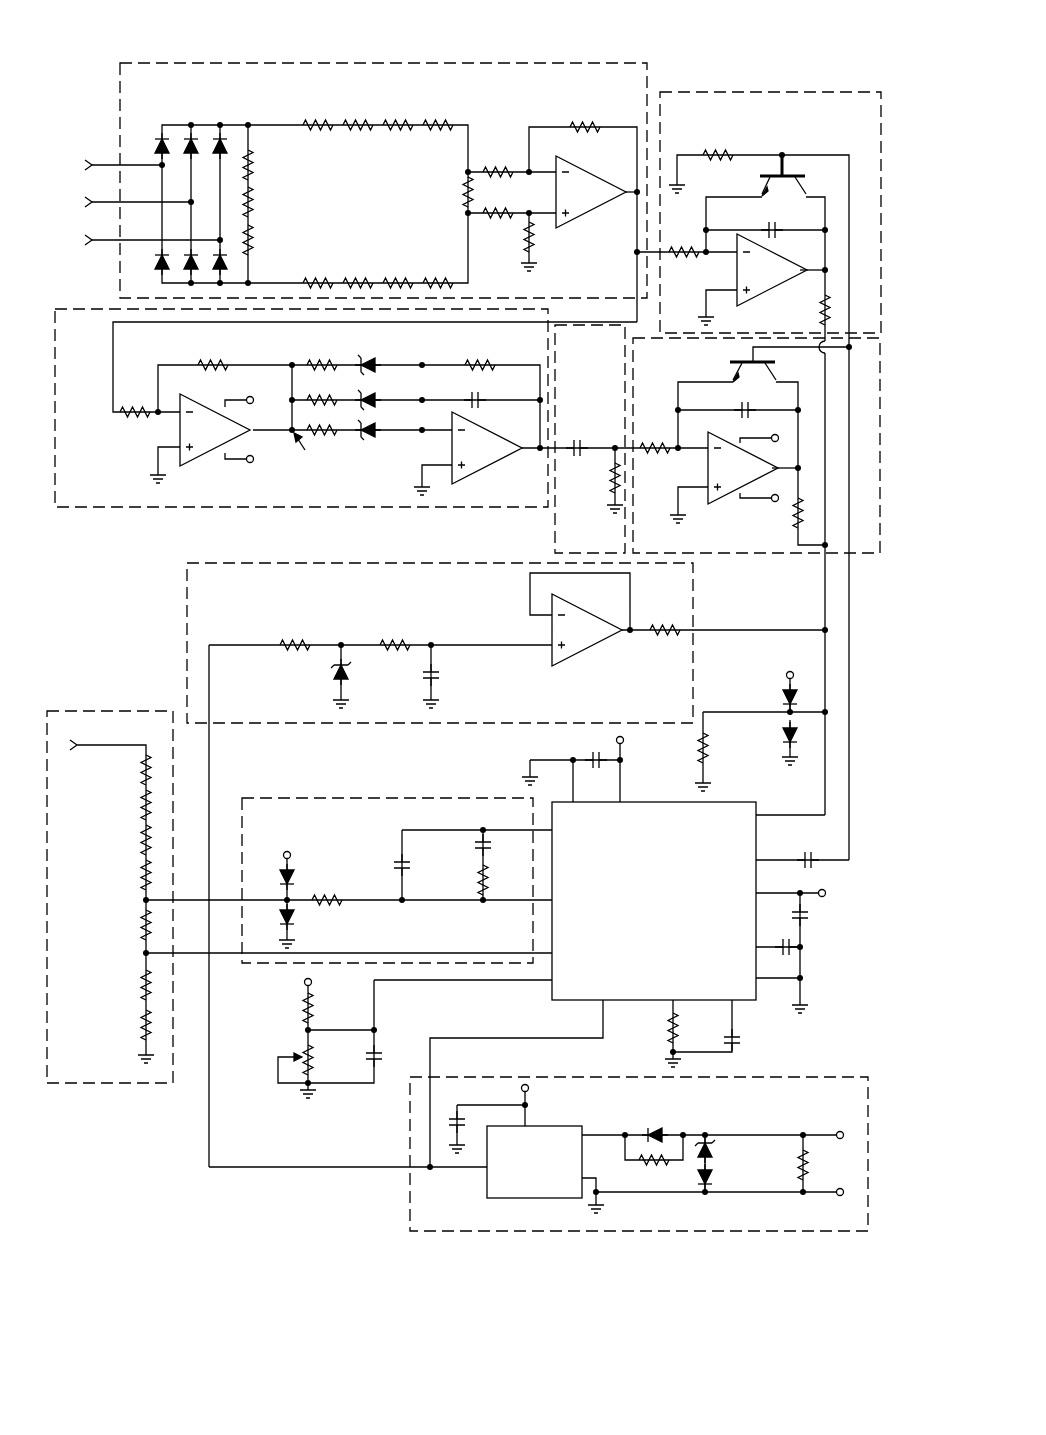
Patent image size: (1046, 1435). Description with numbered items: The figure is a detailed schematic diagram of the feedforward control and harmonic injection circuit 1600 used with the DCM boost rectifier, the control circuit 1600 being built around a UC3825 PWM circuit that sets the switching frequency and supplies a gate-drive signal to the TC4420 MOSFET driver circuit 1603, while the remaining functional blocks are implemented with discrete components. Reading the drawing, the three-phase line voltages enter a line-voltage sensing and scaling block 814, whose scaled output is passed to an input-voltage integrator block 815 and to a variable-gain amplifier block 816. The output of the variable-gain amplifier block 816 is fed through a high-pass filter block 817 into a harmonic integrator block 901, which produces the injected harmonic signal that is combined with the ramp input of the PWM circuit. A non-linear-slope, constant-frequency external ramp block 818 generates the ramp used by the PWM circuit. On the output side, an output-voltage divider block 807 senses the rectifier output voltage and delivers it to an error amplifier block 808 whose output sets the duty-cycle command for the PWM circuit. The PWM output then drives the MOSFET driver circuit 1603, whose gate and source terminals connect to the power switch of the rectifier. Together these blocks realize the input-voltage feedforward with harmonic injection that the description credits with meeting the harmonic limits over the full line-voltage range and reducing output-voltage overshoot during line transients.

The feedforward control and harmonic injection circuit 1600 is at (697, 53).
The line voltage sensing and scaling circuit 814 is at (564, 62).
The input voltage integrator 815 is at (826, 91).
The variable-gain amplifier 816 is at (125, 507).
The high-pass filter 817 is at (555, 522).
The non-linear slope constant-frequency external ramp 818 is at (407, 562).
The harmonic integrator 901 is at (882, 410).
The output-voltage divider 807 is at (111, 711).
The error amplifier 808 is at (391, 798).
The TC4420 MOSFET driver circuit 1603 is at (868, 1096).